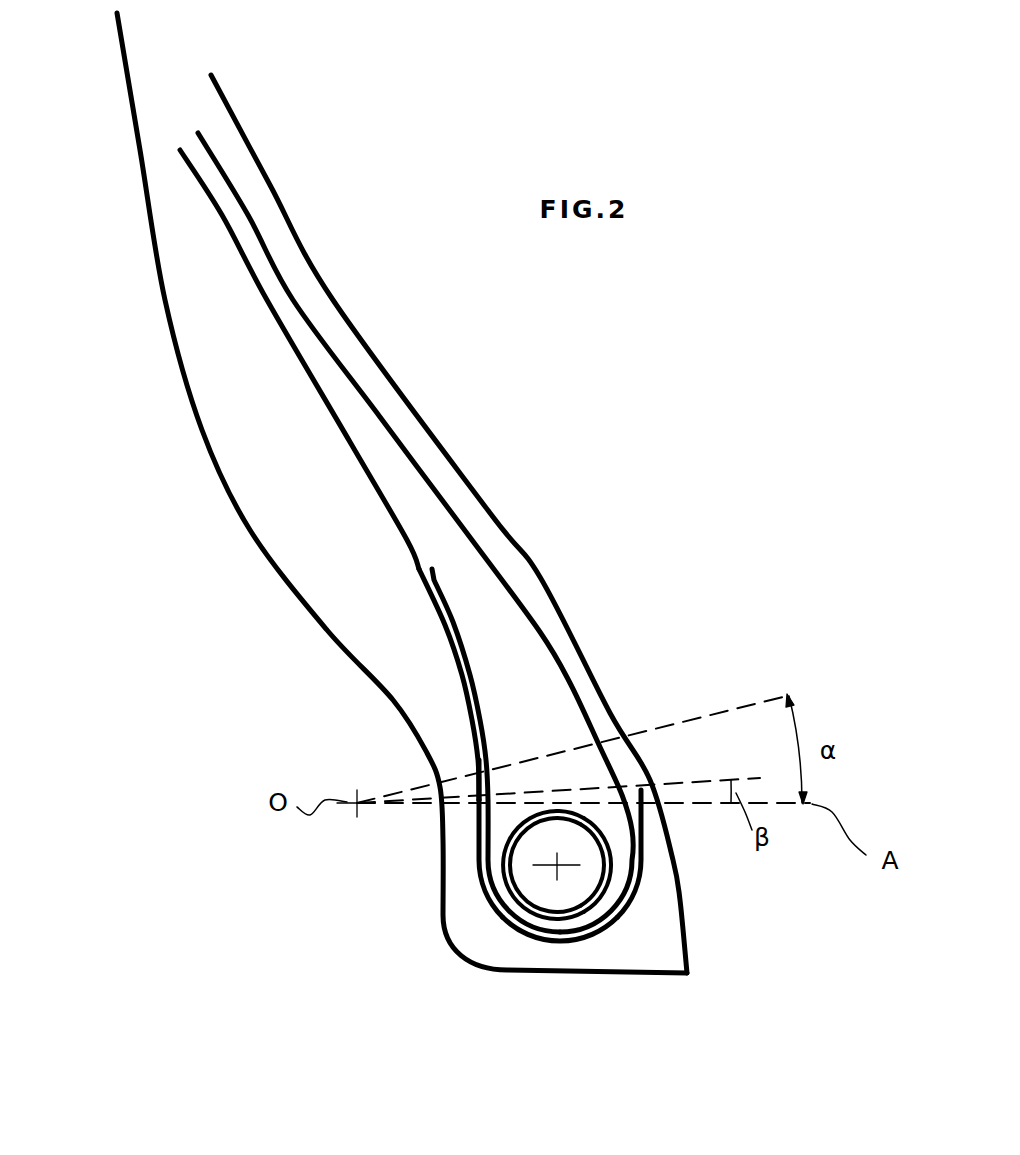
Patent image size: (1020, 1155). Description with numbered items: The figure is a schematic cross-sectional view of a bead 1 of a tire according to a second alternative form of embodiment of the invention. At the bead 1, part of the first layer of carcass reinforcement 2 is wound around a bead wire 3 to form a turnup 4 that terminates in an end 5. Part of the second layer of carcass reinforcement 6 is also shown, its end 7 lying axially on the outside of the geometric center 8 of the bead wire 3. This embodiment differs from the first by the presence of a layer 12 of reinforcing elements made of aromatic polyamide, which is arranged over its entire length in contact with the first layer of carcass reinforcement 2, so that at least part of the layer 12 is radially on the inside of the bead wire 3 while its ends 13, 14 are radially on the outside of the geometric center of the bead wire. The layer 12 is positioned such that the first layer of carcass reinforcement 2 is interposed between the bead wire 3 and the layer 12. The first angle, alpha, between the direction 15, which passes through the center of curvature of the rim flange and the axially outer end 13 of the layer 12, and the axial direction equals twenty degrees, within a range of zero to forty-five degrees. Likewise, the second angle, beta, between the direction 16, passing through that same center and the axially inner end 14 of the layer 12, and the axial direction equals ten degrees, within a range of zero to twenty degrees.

The bead 1 is at (722, 980).
The first layer of carcass reinforcement 2 is at (380, 417).
The bead wire 3 is at (570, 883).
The turnup 4 is at (445, 629).
The end 5 is at (432, 567).
The second layer of carcass reinforcement 6 is at (237, 255).
The end 7 is at (477, 883).
The geometric center 8 is at (560, 862).
The layer of reinforcing elements made of aromatic polyamide 12 is at (493, 918).
The axially outer end 13 is at (480, 770).
The axially inner end 14 is at (641, 790).
The direction 15 is at (806, 690).
The direction 16 is at (687, 783).